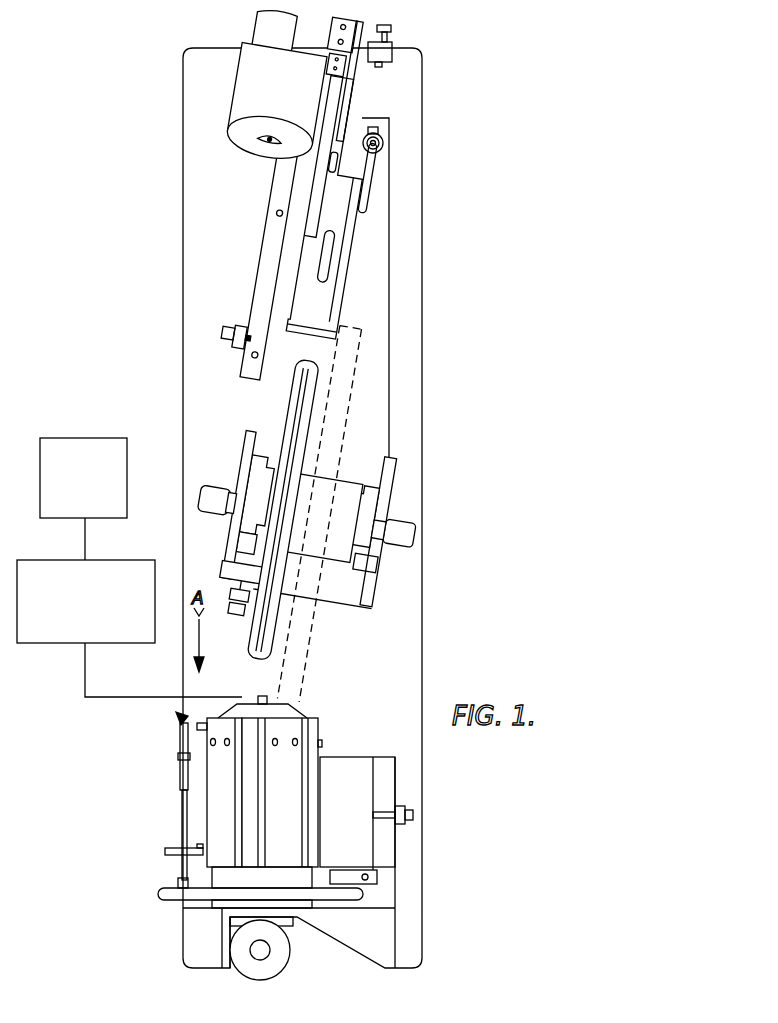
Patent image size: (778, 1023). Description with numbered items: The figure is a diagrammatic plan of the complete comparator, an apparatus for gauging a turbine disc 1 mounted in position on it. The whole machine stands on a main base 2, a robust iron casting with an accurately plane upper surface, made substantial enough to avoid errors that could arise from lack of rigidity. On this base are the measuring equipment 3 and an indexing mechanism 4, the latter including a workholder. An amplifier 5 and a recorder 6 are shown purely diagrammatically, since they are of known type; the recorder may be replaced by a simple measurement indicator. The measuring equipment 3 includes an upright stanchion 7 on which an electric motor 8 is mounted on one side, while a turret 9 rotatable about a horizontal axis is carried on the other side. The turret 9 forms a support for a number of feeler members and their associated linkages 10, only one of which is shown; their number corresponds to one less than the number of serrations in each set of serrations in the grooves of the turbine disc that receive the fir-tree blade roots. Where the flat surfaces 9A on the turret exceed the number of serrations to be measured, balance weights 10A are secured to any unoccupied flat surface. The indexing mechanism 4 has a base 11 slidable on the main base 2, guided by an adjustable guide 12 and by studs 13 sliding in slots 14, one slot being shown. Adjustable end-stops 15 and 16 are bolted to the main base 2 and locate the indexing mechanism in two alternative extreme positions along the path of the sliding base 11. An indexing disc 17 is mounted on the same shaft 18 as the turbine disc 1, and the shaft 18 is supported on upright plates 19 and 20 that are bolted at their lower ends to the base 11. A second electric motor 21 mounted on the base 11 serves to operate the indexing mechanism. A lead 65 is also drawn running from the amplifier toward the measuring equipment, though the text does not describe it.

The turbine disc 1 is at (328, 637).
The main base 2 is at (190, 386).
The measuring equipment 3 is at (351, 821).
The indexing mechanism 4 is at (333, 297).
The amplifier 5 is at (91, 609).
The recorder 6 is at (87, 487).
The upright stanchion 7 is at (385, 928).
The electric motor 8 is at (283, 950).
The turret 9 is at (295, 708).
The flat surfaces 9A is at (213, 802).
The feeler members and associated linkages 10 is at (178, 777).
The balance weights 10A is at (297, 787).
The base 11 is at (380, 360).
The adjustable guide 12 is at (275, 245).
The studs 13 is at (382, 150).
The slots 14 is at (334, 200).
The adjustable end-stop 15 is at (392, 32).
The adjustable end-stop 16 is at (272, 624).
The indexing disc 17 is at (301, 401).
The shaft 18 is at (360, 495).
The upright plate 19 is at (374, 572).
The upright plate 20 is at (254, 445).
The second electric motor 21 is at (217, 100).
The cable 65 is at (188, 698).